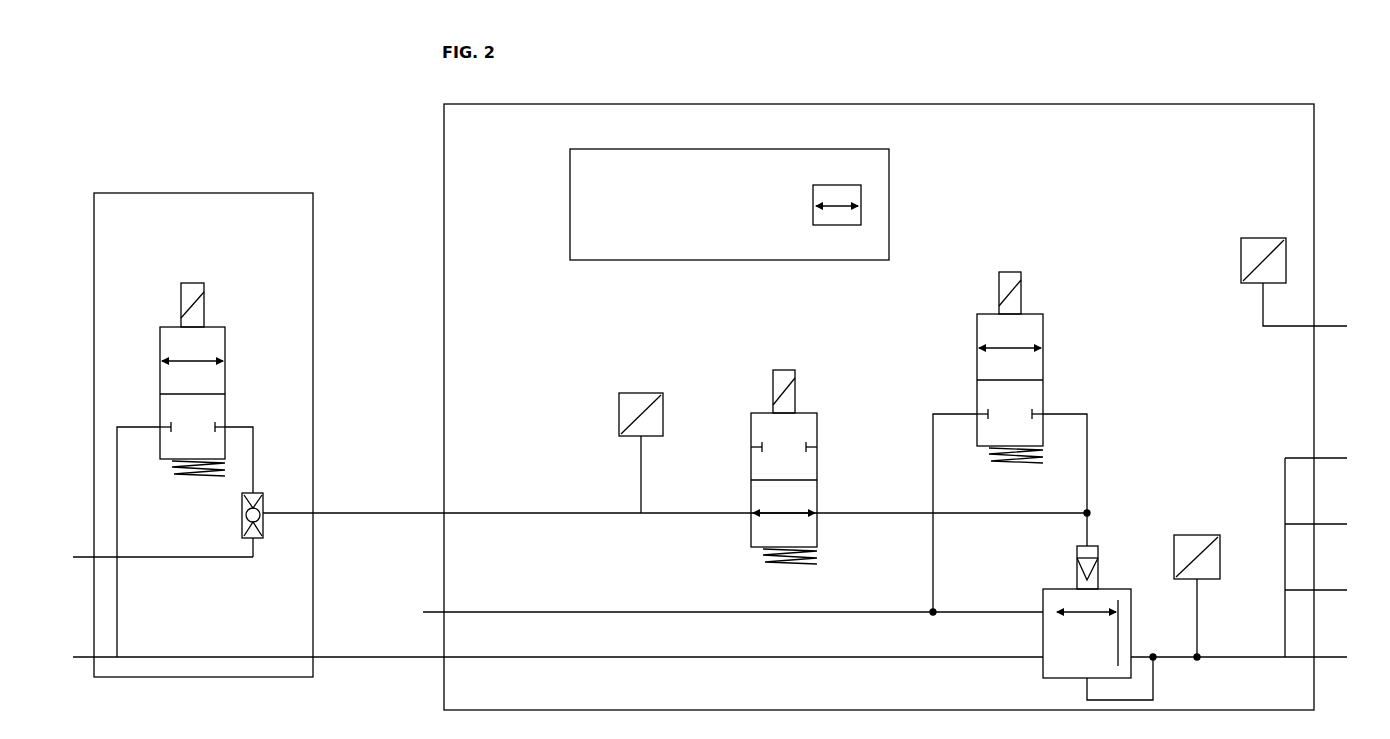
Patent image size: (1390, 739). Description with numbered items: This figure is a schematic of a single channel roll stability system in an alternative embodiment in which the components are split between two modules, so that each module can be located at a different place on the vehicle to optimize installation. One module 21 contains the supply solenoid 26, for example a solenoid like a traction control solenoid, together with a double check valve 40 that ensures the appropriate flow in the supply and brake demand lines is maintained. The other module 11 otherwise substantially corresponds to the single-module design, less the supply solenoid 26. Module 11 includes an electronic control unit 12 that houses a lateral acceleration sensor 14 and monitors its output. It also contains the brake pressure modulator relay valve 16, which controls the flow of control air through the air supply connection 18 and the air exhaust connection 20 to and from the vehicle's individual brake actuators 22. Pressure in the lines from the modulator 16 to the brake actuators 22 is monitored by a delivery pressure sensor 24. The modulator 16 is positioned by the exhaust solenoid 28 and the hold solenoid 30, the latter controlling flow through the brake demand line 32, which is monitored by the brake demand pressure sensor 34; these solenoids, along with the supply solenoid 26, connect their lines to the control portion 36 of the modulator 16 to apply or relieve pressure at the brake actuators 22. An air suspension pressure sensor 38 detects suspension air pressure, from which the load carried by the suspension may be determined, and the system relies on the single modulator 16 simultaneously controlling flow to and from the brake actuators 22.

The module 11 is at (879, 386).
The electronic control unit 12 is at (729, 230).
The lateral acceleration sensor 14 is at (816, 205).
The brake pressure modulator relay valve 16 is at (1099, 644).
The air supply connection 18 is at (693, 641).
The air exhaust connection 20 is at (717, 597).
The module 21 is at (221, 435).
The brake actuators 22 is at (1332, 558).
The delivery pressure sensor 24 is at (1197, 576).
The supply solenoid 26 is at (185, 448).
The exhaust solenoid 28 is at (1010, 421).
The hold solenoid 30 is at (784, 440).
The brake demand line 32 is at (146, 535).
The brake demand pressure sensor 34 is at (641, 431).
The control portion 36 is at (1103, 567).
The air suspension pressure sensor 38 is at (1257, 239).
The double check valve 40 is at (791, 420).